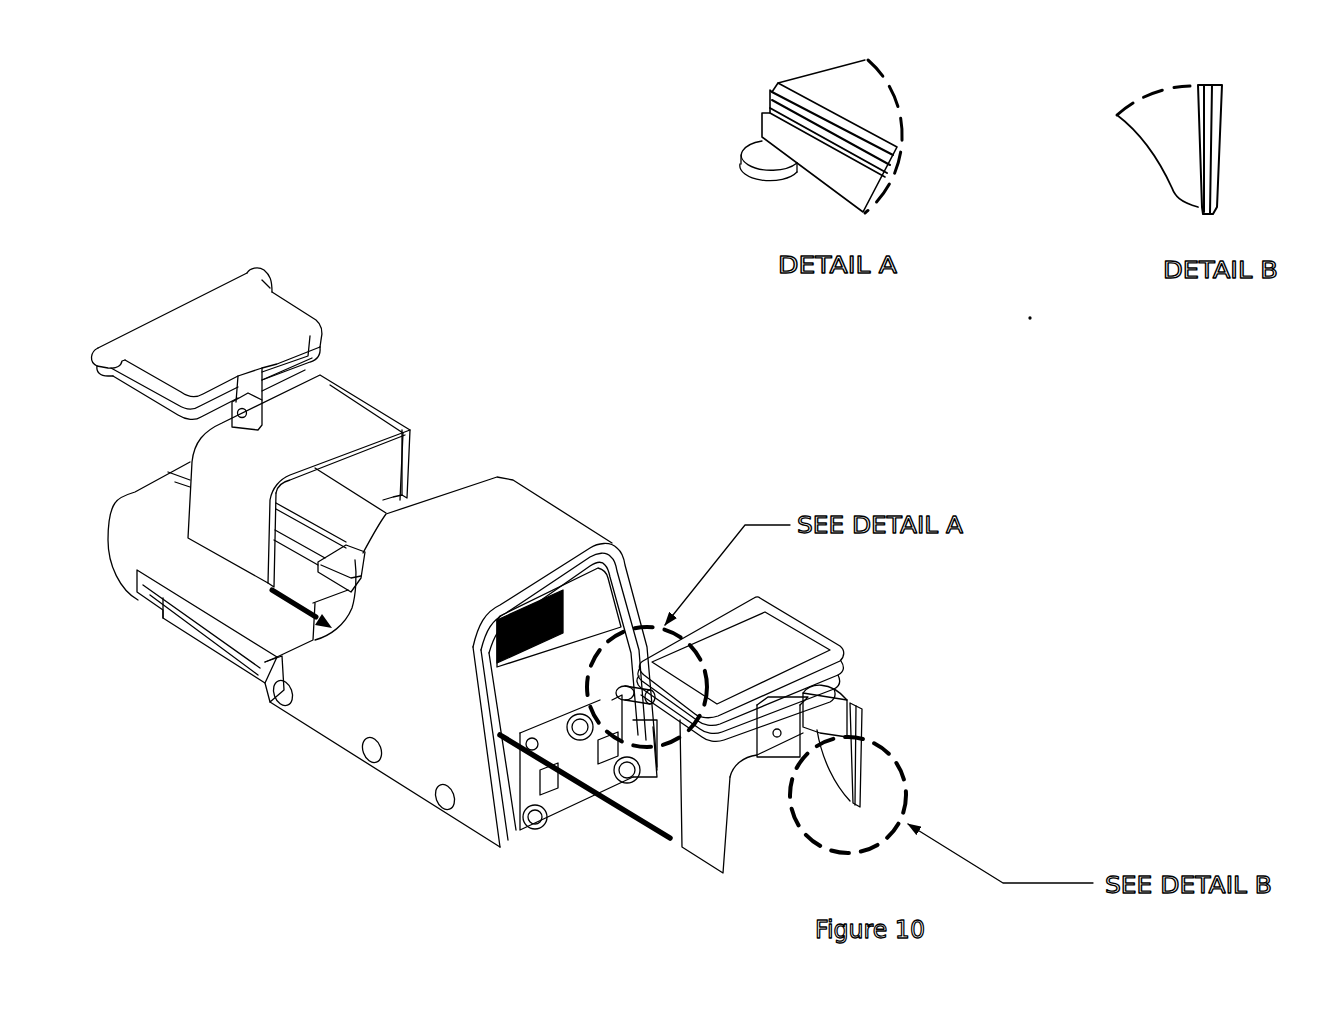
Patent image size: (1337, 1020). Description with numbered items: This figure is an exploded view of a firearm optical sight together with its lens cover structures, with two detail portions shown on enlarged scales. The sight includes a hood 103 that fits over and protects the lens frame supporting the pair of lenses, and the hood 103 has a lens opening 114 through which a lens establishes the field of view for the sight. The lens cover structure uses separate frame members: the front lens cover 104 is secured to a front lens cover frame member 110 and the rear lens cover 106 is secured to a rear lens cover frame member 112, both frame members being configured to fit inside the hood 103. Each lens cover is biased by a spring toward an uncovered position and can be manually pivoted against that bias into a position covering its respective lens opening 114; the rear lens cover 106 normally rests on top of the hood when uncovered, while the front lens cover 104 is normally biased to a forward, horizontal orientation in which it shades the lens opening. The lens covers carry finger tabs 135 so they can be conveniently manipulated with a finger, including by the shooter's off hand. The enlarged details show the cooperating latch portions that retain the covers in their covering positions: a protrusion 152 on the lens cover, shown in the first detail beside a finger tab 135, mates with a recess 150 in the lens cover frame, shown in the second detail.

The hood 103 is at (522, 488).
The front lens cover 104 is at (300, 304).
The rear lens cover 106 is at (832, 631).
The front lens cover frame member 110 is at (380, 400).
The rear lens cover frame member 112 is at (849, 703).
The lens opening 114 is at (593, 617).
The finger tab 135 is at (263, 270).
The latch portion (recess) 150 is at (1202, 193).
The latch portion (protrusion) 152 is at (777, 107).